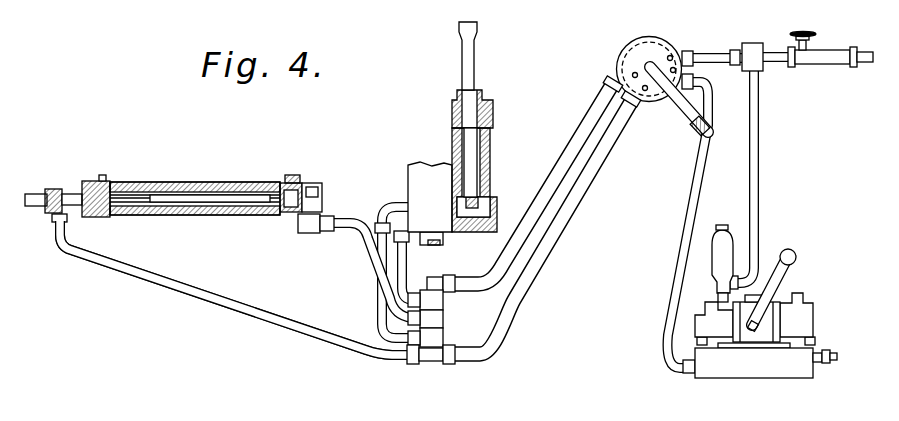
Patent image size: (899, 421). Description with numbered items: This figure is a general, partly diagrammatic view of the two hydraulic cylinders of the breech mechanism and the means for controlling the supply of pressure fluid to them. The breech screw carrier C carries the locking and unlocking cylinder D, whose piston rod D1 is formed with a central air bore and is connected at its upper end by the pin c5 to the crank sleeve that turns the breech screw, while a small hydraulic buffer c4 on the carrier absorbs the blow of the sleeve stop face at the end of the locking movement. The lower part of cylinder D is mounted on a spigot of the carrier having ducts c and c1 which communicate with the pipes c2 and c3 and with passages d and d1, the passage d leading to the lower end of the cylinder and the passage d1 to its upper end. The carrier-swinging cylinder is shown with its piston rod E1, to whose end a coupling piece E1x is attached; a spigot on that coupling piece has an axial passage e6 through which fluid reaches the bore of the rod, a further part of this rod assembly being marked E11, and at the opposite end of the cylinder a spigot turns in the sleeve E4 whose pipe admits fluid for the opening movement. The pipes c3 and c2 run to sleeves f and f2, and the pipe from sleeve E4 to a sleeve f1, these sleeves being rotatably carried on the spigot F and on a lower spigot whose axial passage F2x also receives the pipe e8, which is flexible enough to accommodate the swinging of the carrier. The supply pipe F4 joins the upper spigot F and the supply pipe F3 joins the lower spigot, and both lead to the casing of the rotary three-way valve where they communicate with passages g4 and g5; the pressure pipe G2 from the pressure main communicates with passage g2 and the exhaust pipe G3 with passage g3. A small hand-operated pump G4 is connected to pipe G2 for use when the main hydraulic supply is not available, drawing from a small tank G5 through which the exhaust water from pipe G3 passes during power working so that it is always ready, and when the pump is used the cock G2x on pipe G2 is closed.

The piston rod E1 is at (217, 186).
The coupling piece E1x is at (63, 188).
The piston rod E11 is at (196, 210).
The sleeve E4 is at (300, 229).
The axial passage e6 is at (54, 224).
The pipe e8 is at (230, 309).
The pipe c3 is at (402, 261).
The pipe c2 is at (381, 247).
The pin c5 is at (378, 298).
The breech screw carrier C is at (425, 163).
The passage d is at (452, 200).
The duct c is at (452, 208).
The hydraulic buffer c4 is at (495, 203).
The duct c1 is at (500, 247).
The passage d1 is at (492, 133).
The locking and unlocking cylinder D is at (472, 168).
The piston rod D1 is at (474, 62).
The spigot F is at (446, 279).
The sleeve f is at (444, 301).
The sleeve f1 is at (444, 320).
The sleeve f2 is at (444, 338).
The axial passage F2x is at (434, 362).
The supply pipe F3 is at (562, 236).
The supply pipe F4 is at (586, 129).
The pressure passage g2 is at (678, 43).
The exhaust passage g3 is at (667, 100).
The passage g4 is at (611, 71).
The passage g5 is at (640, 110).
The pressure pipe G2 is at (718, 64).
The cock G2x is at (803, 64).
The exhaust pipe G3 is at (664, 313).
The hand operated pump G4 is at (780, 312).
The tank G5 is at (766, 357).